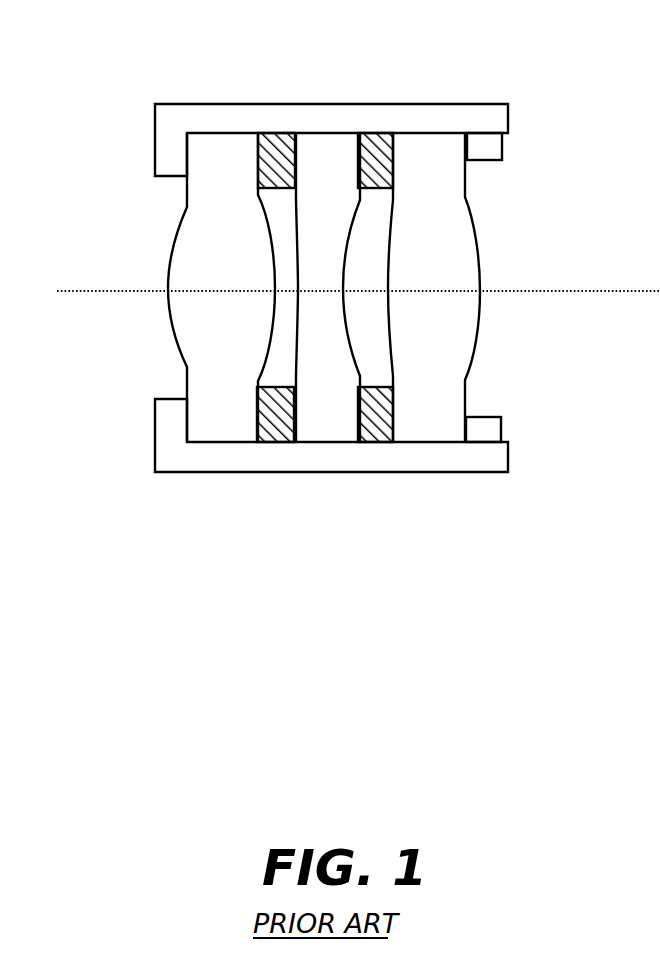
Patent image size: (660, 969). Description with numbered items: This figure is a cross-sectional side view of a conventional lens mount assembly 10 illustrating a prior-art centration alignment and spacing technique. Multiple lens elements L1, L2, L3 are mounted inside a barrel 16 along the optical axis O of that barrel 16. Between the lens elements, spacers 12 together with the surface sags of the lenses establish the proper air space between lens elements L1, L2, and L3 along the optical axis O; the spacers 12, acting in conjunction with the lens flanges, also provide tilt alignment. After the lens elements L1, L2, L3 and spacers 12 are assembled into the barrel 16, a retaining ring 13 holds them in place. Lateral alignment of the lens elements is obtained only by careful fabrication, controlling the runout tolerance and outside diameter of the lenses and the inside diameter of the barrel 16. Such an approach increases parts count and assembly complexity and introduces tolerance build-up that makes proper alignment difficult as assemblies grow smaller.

The lens mount assembly 10 is at (91, 155).
The spacers 12 is at (343, 134).
The retaining ring 13 is at (502, 152).
The barrel 16 is at (332, 472).
The lens element L1 is at (222, 413).
The lens element L2 is at (337, 433).
The lens element L3 is at (432, 420).
The optical axis O is at (108, 292).